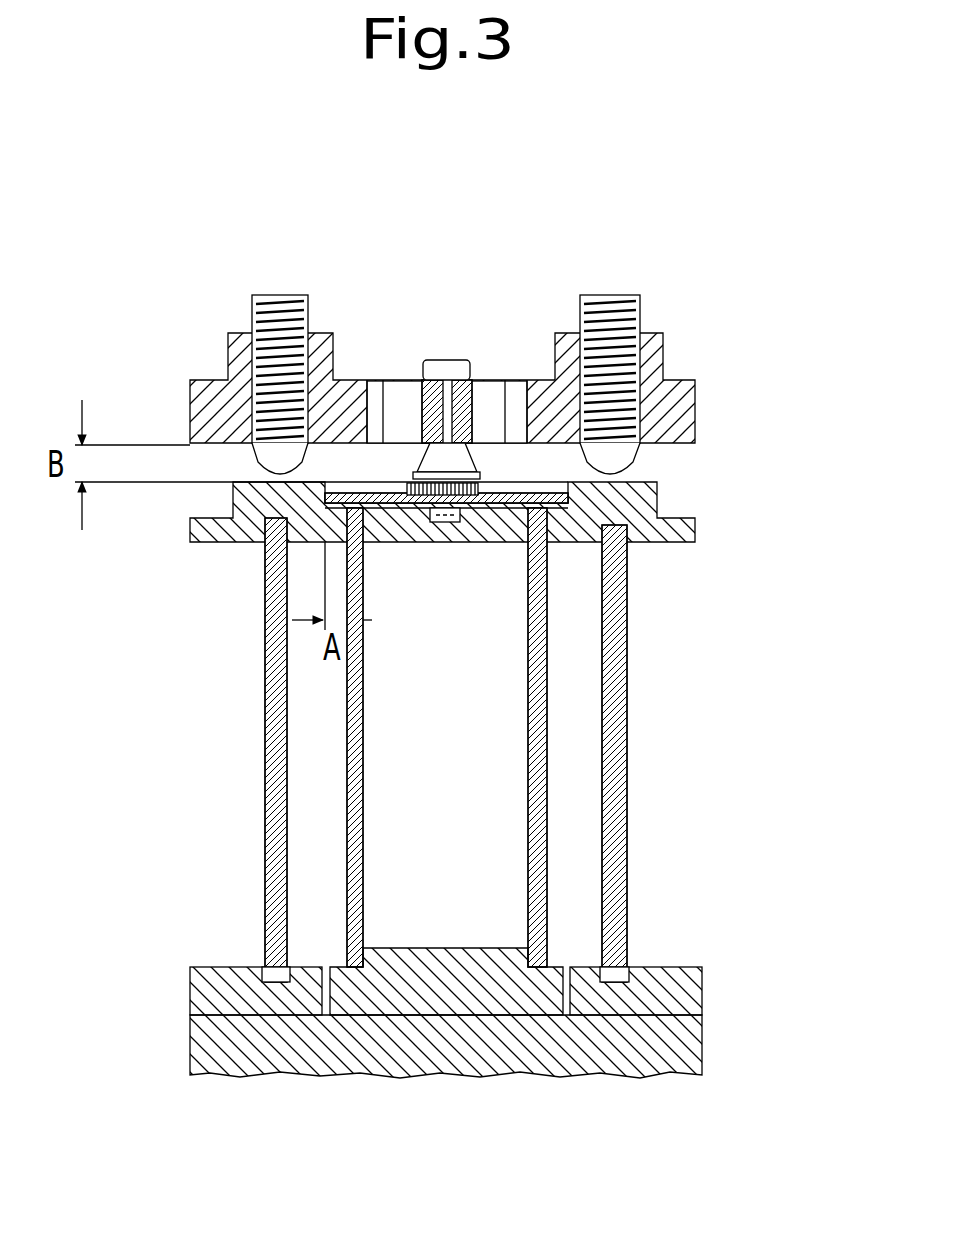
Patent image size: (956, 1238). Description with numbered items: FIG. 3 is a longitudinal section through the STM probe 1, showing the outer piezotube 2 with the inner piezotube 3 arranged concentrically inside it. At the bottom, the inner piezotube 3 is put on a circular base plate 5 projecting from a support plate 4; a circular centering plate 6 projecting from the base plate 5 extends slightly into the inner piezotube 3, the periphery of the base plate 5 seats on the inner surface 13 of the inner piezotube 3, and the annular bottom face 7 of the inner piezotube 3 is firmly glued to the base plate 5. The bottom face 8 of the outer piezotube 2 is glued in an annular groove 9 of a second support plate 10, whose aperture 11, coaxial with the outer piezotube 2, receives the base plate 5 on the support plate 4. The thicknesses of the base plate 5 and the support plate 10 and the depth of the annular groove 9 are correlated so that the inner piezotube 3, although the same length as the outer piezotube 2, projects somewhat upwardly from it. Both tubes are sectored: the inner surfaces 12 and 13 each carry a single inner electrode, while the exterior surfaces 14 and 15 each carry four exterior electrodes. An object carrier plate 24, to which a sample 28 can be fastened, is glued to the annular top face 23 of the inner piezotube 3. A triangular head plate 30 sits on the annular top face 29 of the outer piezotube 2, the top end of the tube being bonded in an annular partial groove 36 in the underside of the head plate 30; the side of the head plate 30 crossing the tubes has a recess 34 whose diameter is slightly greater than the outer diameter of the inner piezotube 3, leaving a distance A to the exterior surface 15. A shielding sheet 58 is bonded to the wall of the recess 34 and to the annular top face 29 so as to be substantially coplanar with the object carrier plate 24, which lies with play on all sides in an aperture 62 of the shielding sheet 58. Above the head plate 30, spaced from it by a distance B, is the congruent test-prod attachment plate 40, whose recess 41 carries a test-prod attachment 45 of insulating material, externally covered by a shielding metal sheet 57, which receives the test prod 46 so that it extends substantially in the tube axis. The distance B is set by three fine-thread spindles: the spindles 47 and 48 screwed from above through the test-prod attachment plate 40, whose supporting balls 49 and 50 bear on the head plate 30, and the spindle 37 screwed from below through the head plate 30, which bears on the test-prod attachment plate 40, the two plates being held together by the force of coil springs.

The STM probe 1 is at (748, 254).
The outer piezotube 2 is at (627, 668).
The inner piezotube 3 is at (547, 720).
The support plate 4 is at (387, 1045).
The base plate 5 is at (525, 985).
The centering plate 6 is at (440, 950).
The annular bottom face 7 is at (540, 962).
The bottom face 8 is at (265, 960).
The annular groove 9 is at (256, 975).
The support plate 10 is at (702, 970).
The aperture 11 is at (325, 967).
The inner surface 12 is at (290, 715).
The inner surface 13 is at (365, 775).
The exterior surface 14 is at (263, 640).
The exterior surface 15 is at (343, 780).
The annular top face 23 is at (345, 566).
The object carrier plate 24 is at (455, 524).
The sample 28 is at (410, 440).
The annular top face 29 is at (625, 560).
The head plate 30 is at (657, 492).
The recess 34 is at (627, 592).
The annular partial groove 36 is at (300, 497).
The fine-thread spindle 37 is at (492, 478).
The test-prod attachment plate 40 is at (235, 368).
The recess 41 is at (365, 385).
The test-prod attachment 45 is at (470, 455).
The test prod 46 is at (447, 378).
The fine-thread spindle 47 is at (620, 298).
The fine-thread spindle 48 is at (250, 295).
The supporting ball 49 is at (482, 488).
The supporting ball 50 is at (268, 452).
The shielding metal sheet 57 is at (428, 372).
The shielding sheet 58 is at (380, 508).
The aperture 62 is at (612, 462).